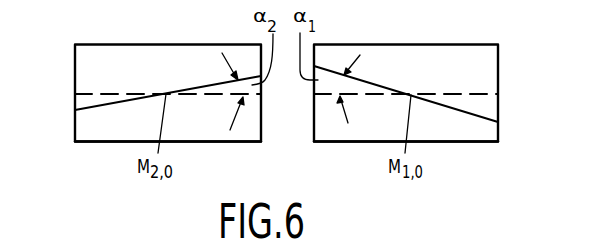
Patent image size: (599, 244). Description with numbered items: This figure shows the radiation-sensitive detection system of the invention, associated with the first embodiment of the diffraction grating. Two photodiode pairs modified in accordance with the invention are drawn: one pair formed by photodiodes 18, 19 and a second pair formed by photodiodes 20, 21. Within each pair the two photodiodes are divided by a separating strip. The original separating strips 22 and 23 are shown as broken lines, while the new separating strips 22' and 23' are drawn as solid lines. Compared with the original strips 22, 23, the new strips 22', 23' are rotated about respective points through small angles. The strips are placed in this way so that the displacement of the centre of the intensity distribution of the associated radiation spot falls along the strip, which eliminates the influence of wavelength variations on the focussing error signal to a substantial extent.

The photodiode 18 is at (488, 57).
The photodiode 19 is at (480, 133).
The photodiode 20 is at (92, 57).
The photodiode 21 is at (88, 126).
The original separating strip 22 is at (429, 85).
The new separating strip 22' is at (431, 99).
The original separating strip 23 is at (144, 87).
The new separating strip 23' is at (144, 102).